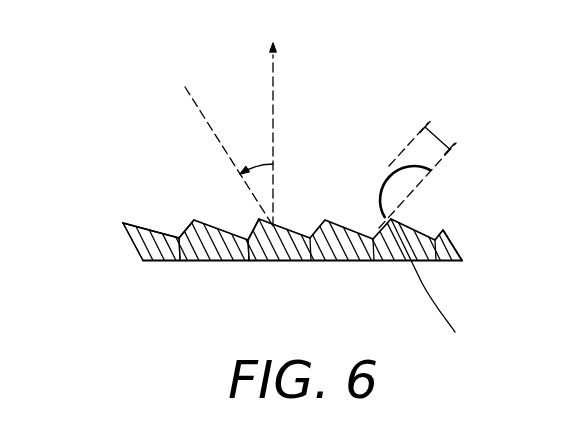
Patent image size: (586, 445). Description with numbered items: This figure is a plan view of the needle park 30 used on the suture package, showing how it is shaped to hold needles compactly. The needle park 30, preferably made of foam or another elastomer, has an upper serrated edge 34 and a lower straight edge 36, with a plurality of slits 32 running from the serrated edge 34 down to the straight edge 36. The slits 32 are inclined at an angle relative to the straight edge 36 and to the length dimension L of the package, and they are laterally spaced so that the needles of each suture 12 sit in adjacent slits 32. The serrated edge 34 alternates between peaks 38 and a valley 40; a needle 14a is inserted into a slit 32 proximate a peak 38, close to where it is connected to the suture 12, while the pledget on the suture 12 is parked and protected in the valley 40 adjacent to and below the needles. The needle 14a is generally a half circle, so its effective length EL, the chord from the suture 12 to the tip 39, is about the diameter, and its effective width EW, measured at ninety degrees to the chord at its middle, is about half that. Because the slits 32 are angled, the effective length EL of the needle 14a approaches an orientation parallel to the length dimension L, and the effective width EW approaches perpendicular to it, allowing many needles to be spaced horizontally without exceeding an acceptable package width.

The suture 12 is at (420, 279).
The needle 14a is at (377, 183).
The needle park 30 is at (119, 257).
The slits 32 is at (283, 261).
The upper serrated edge 34 is at (147, 227).
The lower straight edge 36 is at (461, 261).
The peaks 38 is at (124, 223).
The tip 39 is at (438, 175).
The valley 40 is at (179, 238).
The effective length EL is at (410, 198).
The effective width EW is at (438, 139).
The length dimension L is at (230, 117).